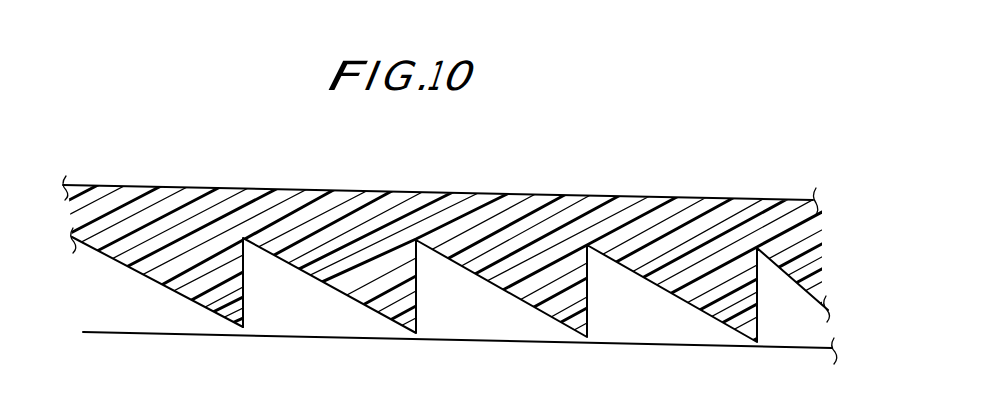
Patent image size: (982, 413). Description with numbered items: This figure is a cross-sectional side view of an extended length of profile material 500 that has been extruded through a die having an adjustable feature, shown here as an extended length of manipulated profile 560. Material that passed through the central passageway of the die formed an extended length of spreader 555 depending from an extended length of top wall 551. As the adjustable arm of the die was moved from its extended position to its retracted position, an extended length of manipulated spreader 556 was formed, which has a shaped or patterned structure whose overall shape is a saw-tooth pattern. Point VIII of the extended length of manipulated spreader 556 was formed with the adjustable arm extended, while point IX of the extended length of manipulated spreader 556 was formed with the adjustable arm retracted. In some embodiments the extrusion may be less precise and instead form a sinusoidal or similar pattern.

The extended length of profile material 500 is at (491, 221).
The extended length of top wall 551 is at (440, 166).
The extended length of spreader 555 is at (460, 337).
The extended length of manipulated spreader 556 is at (153, 282).
The extended length of manipulated profile 560 is at (491, 232).
The point VIII is at (250, 233).
The point IX is at (413, 333).